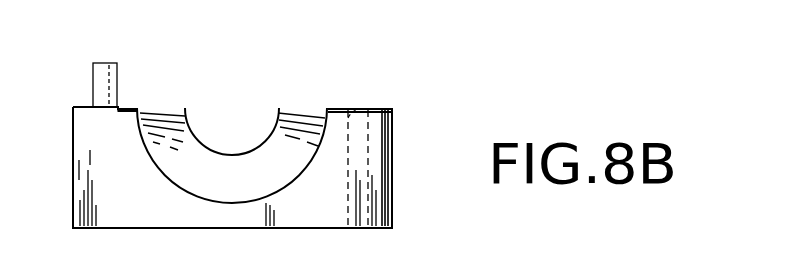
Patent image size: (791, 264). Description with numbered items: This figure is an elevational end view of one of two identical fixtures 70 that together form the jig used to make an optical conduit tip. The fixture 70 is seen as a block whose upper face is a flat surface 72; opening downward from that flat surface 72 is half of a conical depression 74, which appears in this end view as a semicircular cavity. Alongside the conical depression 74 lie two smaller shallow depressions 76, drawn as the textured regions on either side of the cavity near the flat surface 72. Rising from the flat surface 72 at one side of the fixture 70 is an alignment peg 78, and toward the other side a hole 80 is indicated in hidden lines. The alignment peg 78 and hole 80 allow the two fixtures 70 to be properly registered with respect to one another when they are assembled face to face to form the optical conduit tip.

The fixture 70 is at (406, 166).
The flat surface 72 is at (130, 105).
The conical depression 74 is at (267, 137).
The shallow depressions 76 is at (170, 106).
The alignment peg 78 is at (105, 63).
The hole 80 is at (367, 98).